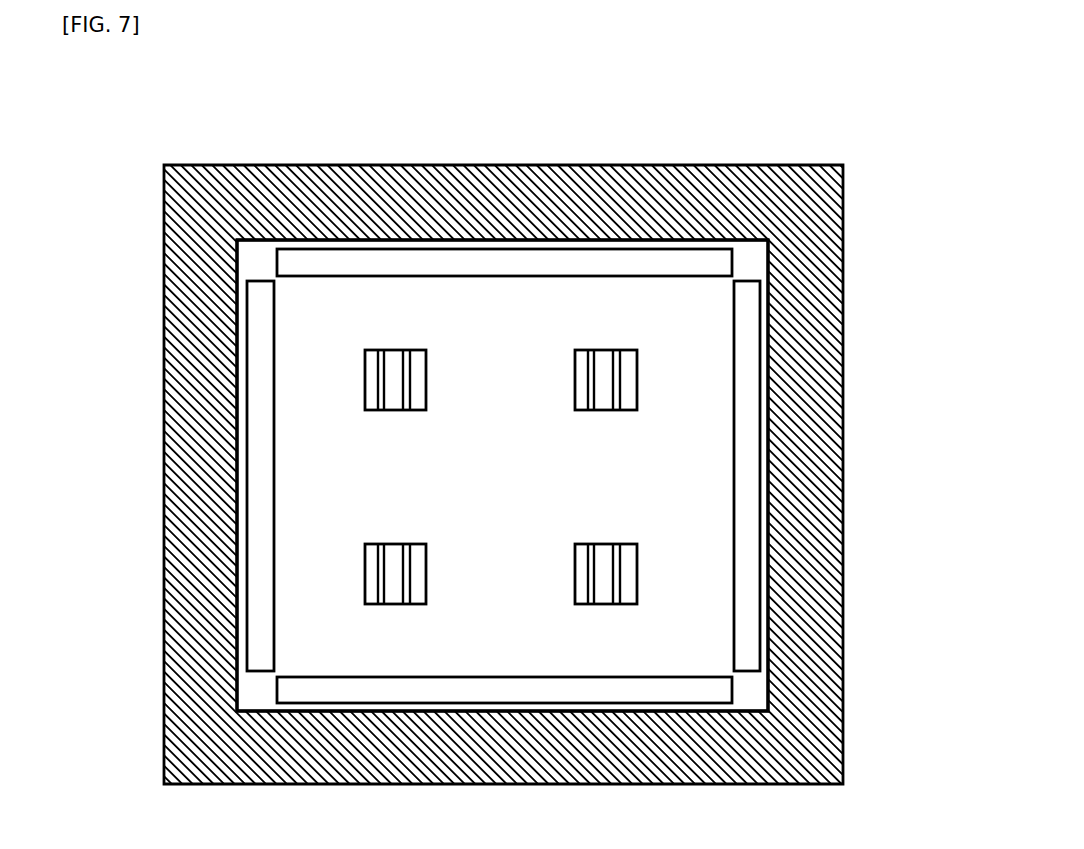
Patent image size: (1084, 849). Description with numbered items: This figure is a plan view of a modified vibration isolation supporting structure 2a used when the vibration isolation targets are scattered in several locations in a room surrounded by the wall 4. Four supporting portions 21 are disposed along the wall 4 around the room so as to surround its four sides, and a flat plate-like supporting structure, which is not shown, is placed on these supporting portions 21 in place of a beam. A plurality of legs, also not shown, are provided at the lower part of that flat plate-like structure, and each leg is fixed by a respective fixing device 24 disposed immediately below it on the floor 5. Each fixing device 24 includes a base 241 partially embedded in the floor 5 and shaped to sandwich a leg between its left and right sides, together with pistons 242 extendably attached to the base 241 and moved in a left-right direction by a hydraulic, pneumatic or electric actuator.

The wall 4 is at (823, 395).
The vibration isolation supporting structure 2a is at (740, 268).
The floor 5 is at (290, 477).
The supporting portion 21 is at (533, 262).
The fixing device 24 is at (501, 331).
The base 241 is at (372, 352).
The piston 242 is at (382, 352).